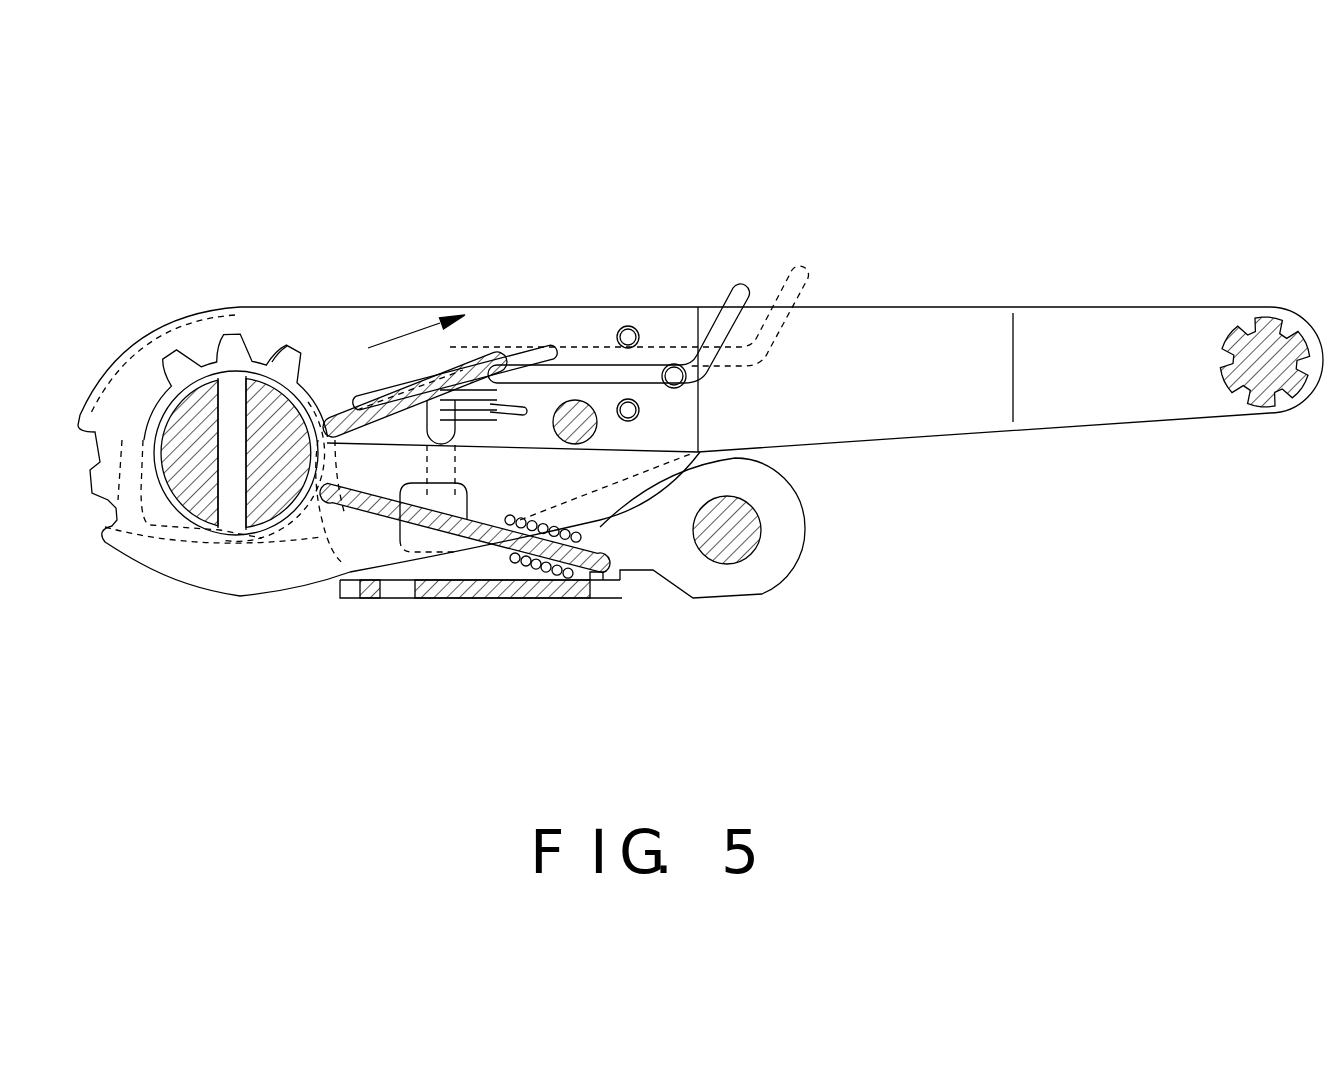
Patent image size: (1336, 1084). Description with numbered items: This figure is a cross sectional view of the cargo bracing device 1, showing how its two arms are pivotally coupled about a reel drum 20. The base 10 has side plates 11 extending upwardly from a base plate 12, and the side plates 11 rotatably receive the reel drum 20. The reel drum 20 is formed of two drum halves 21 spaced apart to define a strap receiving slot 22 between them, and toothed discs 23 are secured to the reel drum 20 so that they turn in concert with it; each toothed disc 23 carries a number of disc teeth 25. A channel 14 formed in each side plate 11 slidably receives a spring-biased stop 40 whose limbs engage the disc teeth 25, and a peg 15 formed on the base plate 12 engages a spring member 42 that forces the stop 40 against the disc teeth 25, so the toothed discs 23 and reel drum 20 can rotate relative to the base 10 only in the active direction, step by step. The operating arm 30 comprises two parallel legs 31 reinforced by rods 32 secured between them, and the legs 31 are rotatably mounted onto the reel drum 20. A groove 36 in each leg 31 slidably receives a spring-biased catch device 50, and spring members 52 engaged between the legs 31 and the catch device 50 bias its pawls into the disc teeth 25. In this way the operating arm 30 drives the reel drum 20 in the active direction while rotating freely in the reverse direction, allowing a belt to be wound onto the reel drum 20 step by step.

The cargo bracing device 1 is at (798, 205).
The base 10 is at (787, 580).
The side plates 11 is at (788, 538).
The base plate 12 is at (484, 598).
The channel 14 is at (340, 500).
The peg 15 is at (768, 466).
The reel drum 20 is at (190, 410).
The drum halves 21 is at (267, 533).
The strap receiving slot 22 is at (200, 415).
The toothed discs 23 is at (233, 407).
The disc teeth 25 is at (293, 350).
The operating arm 30 is at (1162, 308).
The legs 31 is at (1147, 402).
The rods 32 is at (1275, 372).
The groove 36 is at (350, 407).
The spring-biased stop 40 is at (398, 528).
The spring member 42 is at (533, 565).
The spring-biased catch device 50 is at (482, 370).
The spring members 52 is at (505, 358).